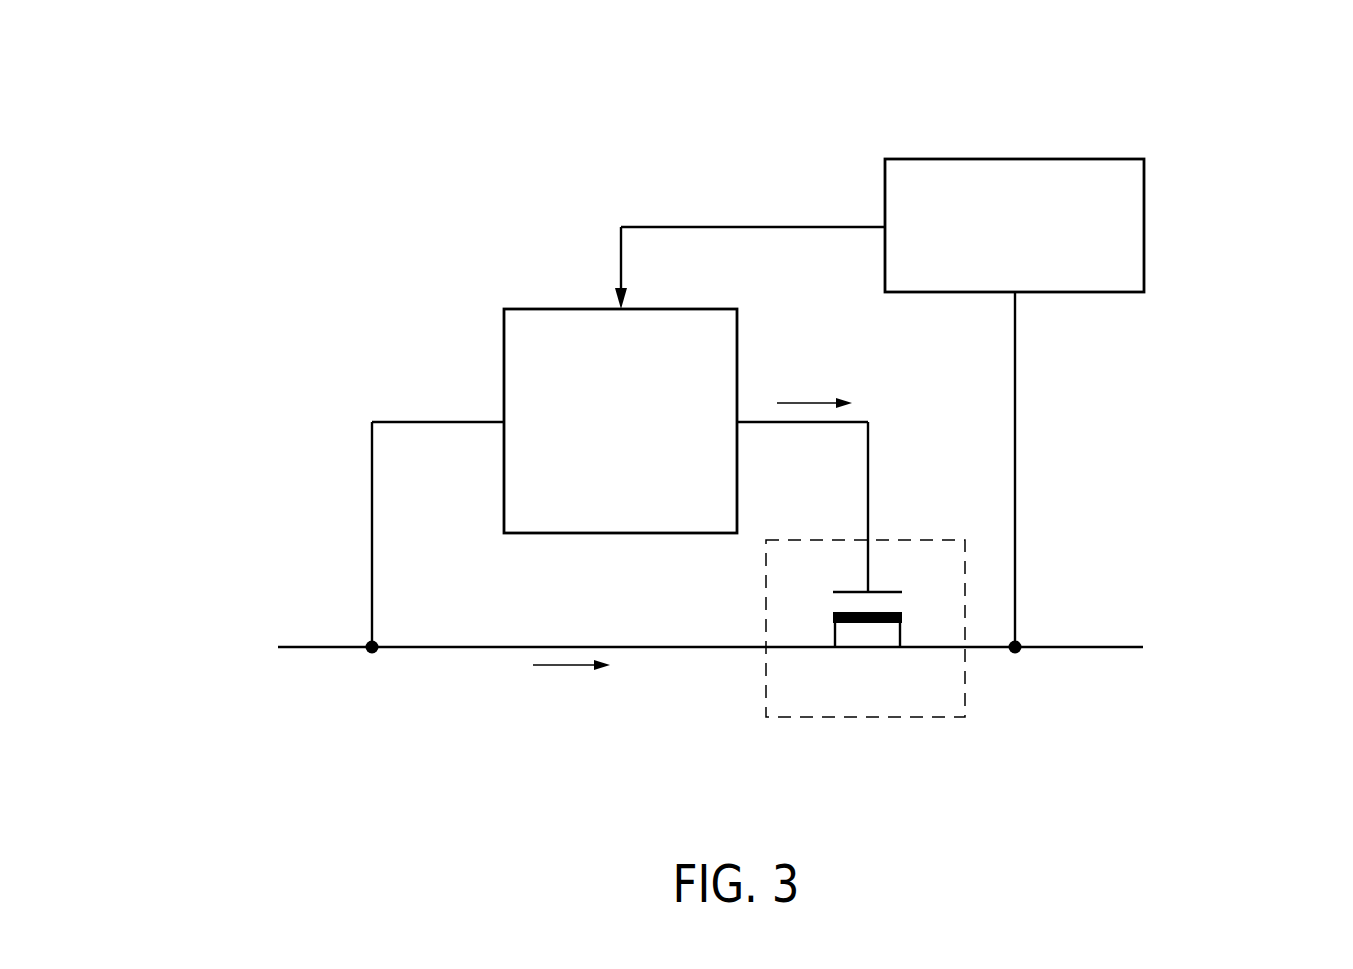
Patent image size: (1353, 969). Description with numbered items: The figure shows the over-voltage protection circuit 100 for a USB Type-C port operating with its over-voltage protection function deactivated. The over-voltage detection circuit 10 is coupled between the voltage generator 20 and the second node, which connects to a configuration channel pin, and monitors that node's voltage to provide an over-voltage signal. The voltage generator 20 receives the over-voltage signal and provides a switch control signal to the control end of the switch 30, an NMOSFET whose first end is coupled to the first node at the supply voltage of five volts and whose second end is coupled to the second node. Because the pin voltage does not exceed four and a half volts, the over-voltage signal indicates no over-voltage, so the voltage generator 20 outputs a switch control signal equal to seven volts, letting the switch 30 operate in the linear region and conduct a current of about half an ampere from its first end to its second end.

The over-voltage protection circuit 100 is at (1234, 104).
The over-voltage detection circuit 10 is at (1020, 158).
The voltage generator 20 is at (554, 308).
The switch 30 is at (884, 720).